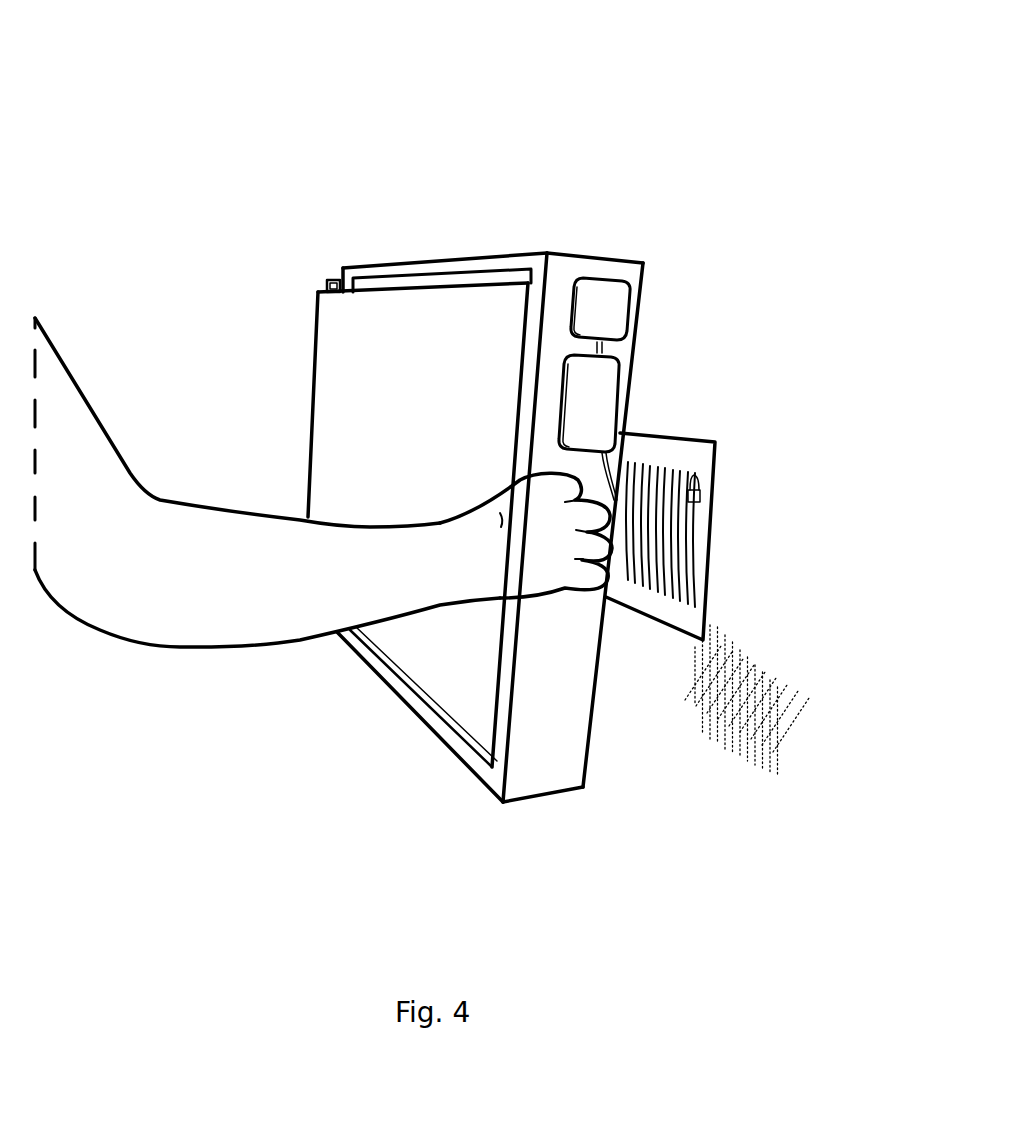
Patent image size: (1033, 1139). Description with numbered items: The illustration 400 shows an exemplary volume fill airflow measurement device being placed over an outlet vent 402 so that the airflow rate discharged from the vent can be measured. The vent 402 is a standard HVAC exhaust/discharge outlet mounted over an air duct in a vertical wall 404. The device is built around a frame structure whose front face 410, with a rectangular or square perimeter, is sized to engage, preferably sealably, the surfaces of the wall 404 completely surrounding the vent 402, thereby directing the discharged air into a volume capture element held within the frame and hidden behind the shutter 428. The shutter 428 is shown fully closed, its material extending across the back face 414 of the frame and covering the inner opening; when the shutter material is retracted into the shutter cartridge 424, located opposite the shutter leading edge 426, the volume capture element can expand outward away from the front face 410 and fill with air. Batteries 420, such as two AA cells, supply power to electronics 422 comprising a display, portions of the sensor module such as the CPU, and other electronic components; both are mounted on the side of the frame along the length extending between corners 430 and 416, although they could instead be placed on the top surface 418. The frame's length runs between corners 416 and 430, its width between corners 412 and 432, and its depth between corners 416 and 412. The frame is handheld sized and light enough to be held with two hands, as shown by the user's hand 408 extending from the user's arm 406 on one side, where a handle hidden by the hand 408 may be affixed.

The illustration 400 is at (682, 100).
The outlet vent 402 is at (702, 462).
The vertical wall 404 is at (758, 655).
The user's arm 406 is at (250, 537).
The user's hand 408 is at (505, 520).
The front face 410 is at (593, 720).
The corner 412 is at (547, 253).
The back face 414 is at (460, 263).
The corner 416 is at (648, 262).
The top surface 418 is at (510, 255).
The batteries 420 is at (617, 312).
The electronics 422 is at (603, 400).
The shutter cartridge 424 is at (325, 282).
The shutter leading edge 426 is at (497, 728).
The shutter 428 is at (393, 300).
The corner 430 is at (587, 788).
The corner 432 is at (343, 287).